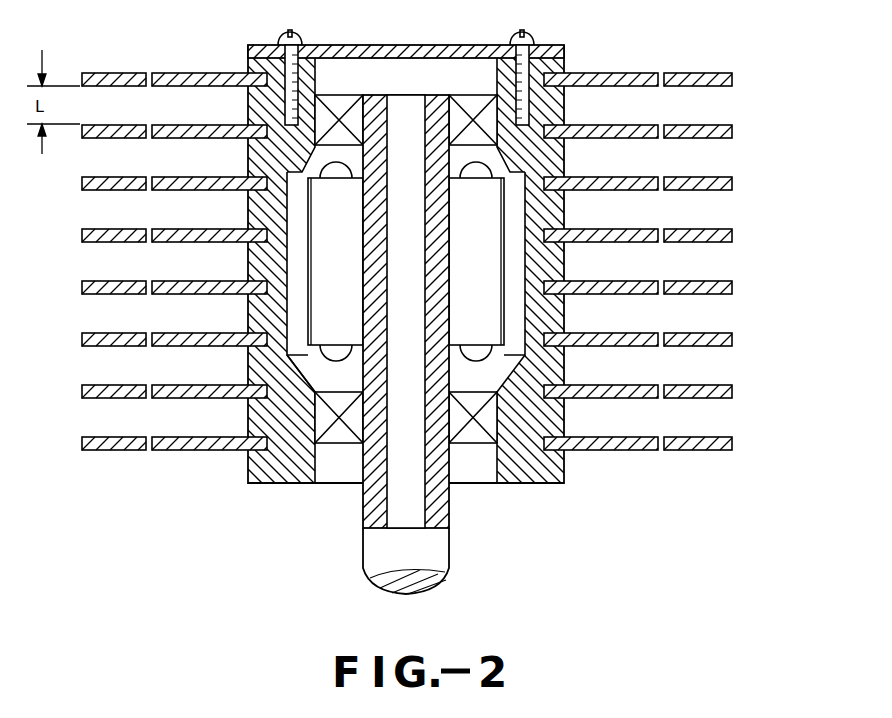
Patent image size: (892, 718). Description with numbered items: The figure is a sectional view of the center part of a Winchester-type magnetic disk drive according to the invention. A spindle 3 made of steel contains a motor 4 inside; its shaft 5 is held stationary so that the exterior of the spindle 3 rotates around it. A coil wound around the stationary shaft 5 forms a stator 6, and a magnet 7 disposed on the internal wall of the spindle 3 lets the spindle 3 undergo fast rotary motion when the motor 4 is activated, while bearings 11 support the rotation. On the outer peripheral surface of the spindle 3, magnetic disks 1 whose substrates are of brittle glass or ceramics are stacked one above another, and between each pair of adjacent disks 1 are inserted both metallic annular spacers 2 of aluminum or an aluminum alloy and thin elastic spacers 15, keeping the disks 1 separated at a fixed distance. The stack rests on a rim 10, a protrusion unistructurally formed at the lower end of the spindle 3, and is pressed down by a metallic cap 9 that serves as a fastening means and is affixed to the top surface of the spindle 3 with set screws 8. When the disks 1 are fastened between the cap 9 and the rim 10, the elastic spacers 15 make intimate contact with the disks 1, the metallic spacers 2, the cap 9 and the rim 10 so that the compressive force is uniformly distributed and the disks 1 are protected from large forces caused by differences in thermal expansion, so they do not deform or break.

The magnetic disk 1 is at (736, 79).
The metallic spacer 2 is at (244, 443).
The spindle 3 is at (303, 483).
The motor 4 is at (498, 370).
The shaft 5 is at (364, 556).
The stator 6 is at (348, 187).
The magnet 7 is at (299, 345).
The set screw 8 is at (297, 37).
The cap 9 is at (429, 45).
The rim 10 is at (248, 483).
The bearing 11 is at (478, 102).
The elastic spacer 15 is at (552, 443).